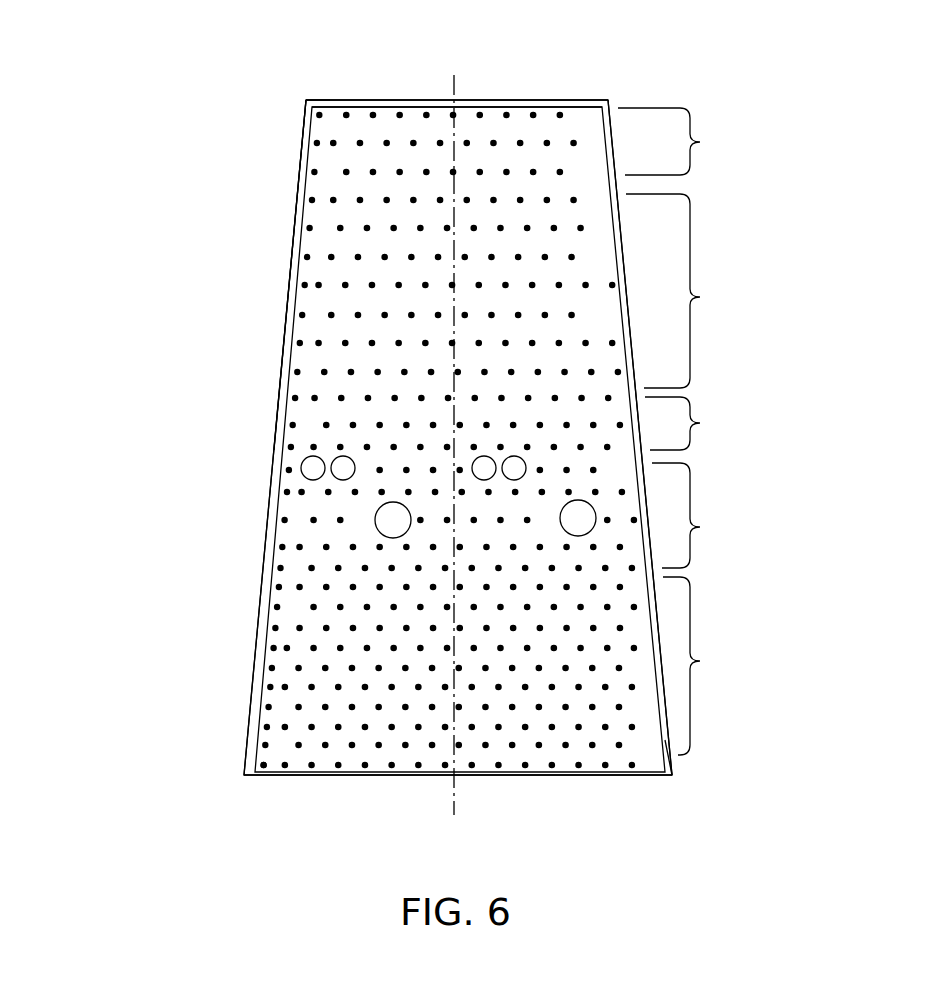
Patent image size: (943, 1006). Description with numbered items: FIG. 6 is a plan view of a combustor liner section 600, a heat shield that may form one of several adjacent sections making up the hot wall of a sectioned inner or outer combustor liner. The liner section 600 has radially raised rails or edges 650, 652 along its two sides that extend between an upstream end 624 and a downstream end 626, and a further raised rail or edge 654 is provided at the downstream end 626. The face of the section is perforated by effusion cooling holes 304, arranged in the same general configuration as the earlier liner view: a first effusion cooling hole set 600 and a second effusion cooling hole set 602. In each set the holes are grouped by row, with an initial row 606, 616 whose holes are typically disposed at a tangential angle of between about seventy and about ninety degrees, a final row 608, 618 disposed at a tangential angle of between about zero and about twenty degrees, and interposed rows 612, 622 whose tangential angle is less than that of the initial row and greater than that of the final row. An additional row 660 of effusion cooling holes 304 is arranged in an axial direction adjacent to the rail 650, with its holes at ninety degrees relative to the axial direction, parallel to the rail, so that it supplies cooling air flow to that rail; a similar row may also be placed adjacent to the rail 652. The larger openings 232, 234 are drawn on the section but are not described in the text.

The combustor liner section 600 is at (127, 106).
The second effusion cooling hole set 602 is at (207, 108).
The additional row of effusion cooling holes 660 is at (318, 98).
The raised rail 650 is at (303, 118).
The downstream end 626 is at (412, 103).
The raised rail at downstream end 654 is at (505, 100).
The raised rail 652 is at (613, 127).
The final row 618 is at (690, 141).
The interposed rows 622 is at (694, 291).
The initial row 616 is at (703, 423).
The final row 608 is at (708, 515).
The interposed rows 612 is at (714, 666).
The small mounting holes 234 is at (305, 460).
The large mounting holes 232 is at (596, 512).
The effusion cooling holes 304 is at (260, 771).
The upstream end 624 is at (357, 777).
The initial row 606 is at (650, 765).